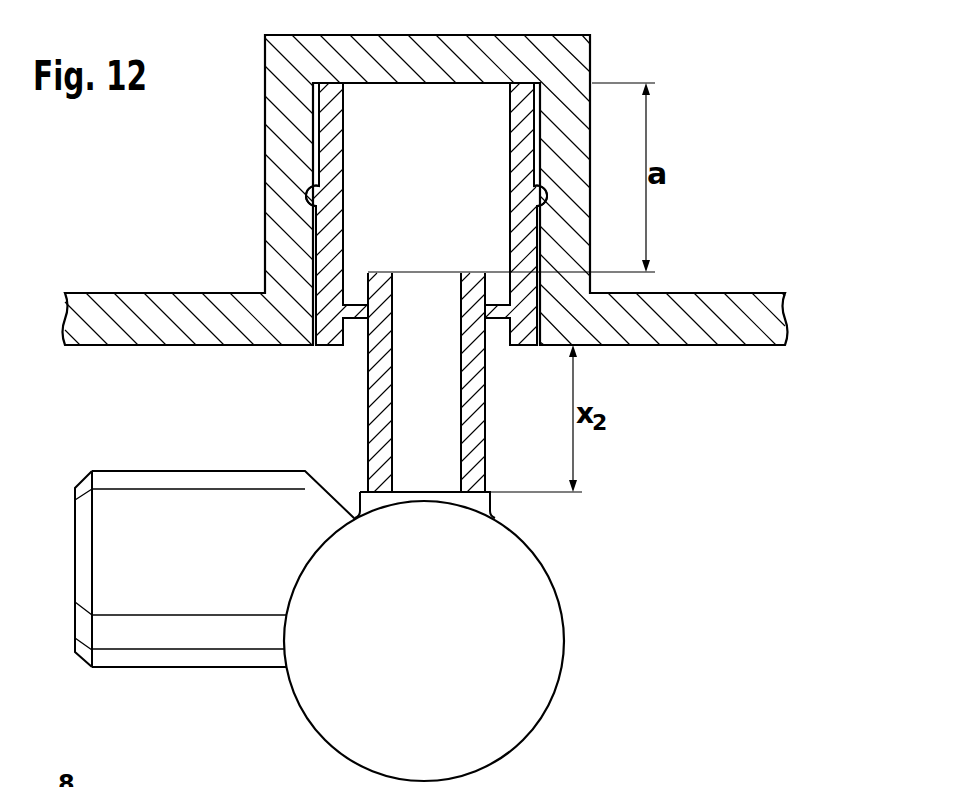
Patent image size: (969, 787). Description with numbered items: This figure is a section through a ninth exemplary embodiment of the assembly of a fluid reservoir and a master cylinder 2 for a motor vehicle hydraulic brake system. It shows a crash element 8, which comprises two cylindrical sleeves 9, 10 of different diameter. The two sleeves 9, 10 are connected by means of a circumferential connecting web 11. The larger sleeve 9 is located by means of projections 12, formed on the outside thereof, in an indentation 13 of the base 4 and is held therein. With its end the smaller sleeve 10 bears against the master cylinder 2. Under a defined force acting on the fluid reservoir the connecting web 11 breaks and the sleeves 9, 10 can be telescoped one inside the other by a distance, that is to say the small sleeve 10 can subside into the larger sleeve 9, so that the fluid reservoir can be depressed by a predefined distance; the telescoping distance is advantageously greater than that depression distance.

The master cylinder 2 is at (537, 643).
The base 4 is at (128, 310).
The crash element 8 is at (375, 395).
The sleeve 9 is at (330, 127).
The sleeve 10 is at (382, 403).
The connecting web 11 is at (355, 323).
The projections 12 is at (307, 196).
The indentation 13 is at (309, 205).